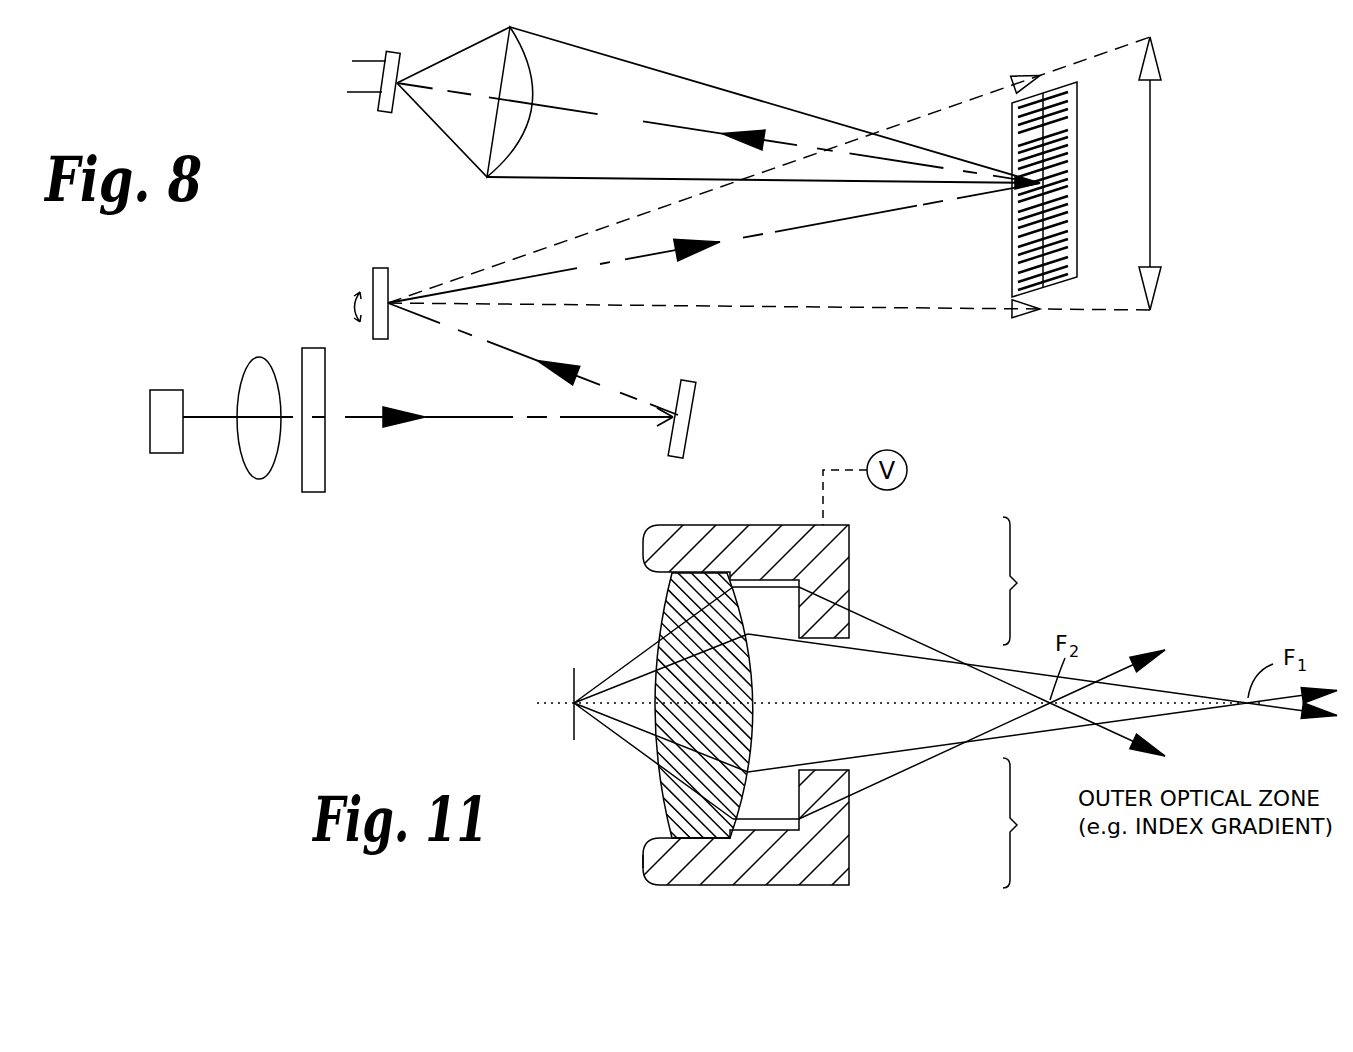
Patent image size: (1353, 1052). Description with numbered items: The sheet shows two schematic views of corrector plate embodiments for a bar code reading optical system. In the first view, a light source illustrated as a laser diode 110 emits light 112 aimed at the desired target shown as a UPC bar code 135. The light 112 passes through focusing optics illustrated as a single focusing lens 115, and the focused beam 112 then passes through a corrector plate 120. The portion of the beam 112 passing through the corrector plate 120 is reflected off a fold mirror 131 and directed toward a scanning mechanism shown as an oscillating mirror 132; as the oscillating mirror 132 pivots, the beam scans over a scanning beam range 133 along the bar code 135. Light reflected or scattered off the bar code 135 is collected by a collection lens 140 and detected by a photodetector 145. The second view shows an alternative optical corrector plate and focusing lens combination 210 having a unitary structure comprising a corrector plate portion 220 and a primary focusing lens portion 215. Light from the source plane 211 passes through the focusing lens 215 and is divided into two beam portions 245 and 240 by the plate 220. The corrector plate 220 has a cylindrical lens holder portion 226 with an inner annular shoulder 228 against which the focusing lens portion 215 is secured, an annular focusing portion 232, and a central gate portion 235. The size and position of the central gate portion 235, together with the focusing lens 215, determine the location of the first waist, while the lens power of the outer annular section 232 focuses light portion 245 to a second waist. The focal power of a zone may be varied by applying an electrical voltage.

In FIG. 8, the laser diode 110 is at (157, 448).
In FIG. 8, the light 112 is at (465, 417).
In FIG. 8, the focusing lens 115 is at (258, 478).
In FIG. 8, the corrector plate 120 is at (322, 477).
In FIG. 8, the fold mirror 131 is at (678, 448).
In FIG. 8, the oscillating mirror 132 is at (375, 268).
In FIG. 8, the scanning beam range 133 is at (1170, 173).
In FIG. 8, the UPC bar code 135 is at (1020, 270).
In FIG. 8, the collection lens 140 is at (485, 177).
In FIG. 8, the photodetector 145 is at (376, 109).
In FIG. 11, the optical corrector plate and focusing lens combination 210 is at (746, 582).
In FIG. 11, the source plane 211 is at (576, 743).
In FIG. 11, the primary focusing lens portion 215 is at (668, 612).
In FIG. 11, the corrector plate portion 220 is at (741, 827).
In FIG. 11, the cylindrical lens holder portion 226 is at (643, 863).
In FIG. 11, the inner annular shoulder 228 is at (717, 838).
In FIG. 11, the annular focusing portion 232 is at (1036, 702).
In FIG. 11, the central gate portion 235 is at (842, 759).
In FIG. 11, the beam portion 240 is at (1170, 690).
In FIG. 11, the beam portion 245 is at (925, 645).